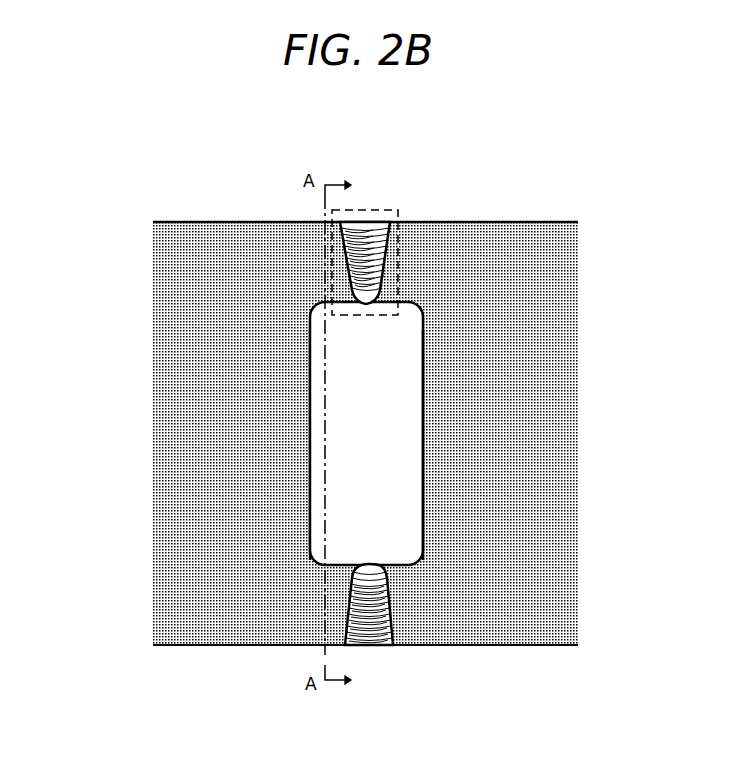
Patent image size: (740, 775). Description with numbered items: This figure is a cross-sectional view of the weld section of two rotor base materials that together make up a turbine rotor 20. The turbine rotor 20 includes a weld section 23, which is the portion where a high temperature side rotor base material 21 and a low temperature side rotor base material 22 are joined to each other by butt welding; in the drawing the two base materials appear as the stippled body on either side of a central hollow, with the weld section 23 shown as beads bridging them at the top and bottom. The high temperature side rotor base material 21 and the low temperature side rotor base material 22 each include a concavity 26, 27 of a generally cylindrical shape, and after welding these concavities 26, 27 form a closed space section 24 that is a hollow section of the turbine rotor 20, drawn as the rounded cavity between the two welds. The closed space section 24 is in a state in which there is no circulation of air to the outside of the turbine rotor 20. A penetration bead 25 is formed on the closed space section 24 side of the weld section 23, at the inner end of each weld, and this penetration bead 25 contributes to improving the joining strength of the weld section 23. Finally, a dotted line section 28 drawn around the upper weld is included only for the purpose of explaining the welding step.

The turbine rotor 20 is at (575, 189).
The high temperature side rotor base material 21 is at (497, 236).
The low temperature side rotor base material 22 is at (216, 237).
The weld section 23 is at (358, 248).
The closed space section 24 is at (405, 396).
The penetration bead 25 is at (368, 305).
The concavity 26 is at (423, 463).
The concavity 27 is at (310, 395).
The dotted line section 28 is at (400, 211).